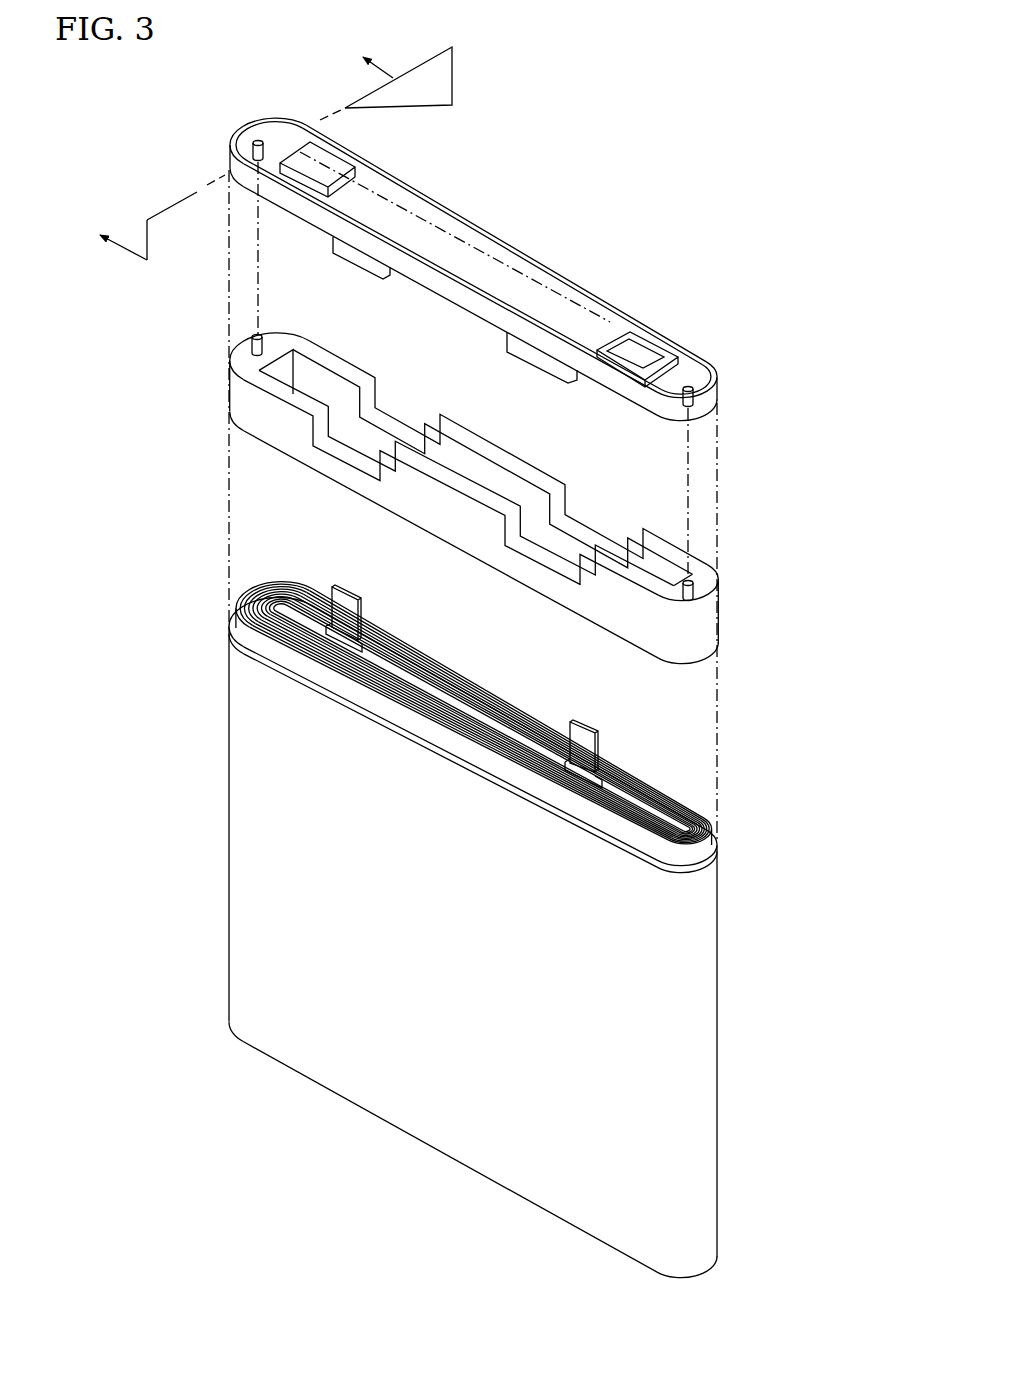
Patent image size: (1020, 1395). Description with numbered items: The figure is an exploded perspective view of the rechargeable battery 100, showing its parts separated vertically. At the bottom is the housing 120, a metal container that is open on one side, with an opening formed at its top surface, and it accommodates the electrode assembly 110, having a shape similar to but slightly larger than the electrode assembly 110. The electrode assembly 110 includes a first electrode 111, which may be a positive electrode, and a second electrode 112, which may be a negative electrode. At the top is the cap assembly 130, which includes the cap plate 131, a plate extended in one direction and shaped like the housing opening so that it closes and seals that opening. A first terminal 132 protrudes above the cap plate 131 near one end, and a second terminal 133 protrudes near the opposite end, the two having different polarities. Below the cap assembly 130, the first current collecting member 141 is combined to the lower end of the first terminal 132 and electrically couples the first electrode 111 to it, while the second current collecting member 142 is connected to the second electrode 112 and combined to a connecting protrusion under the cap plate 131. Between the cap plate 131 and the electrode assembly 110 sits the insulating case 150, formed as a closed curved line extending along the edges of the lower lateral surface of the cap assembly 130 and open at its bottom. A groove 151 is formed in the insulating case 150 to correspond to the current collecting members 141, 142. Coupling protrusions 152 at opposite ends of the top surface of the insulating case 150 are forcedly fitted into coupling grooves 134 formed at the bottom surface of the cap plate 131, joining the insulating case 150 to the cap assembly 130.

The rechargeable battery 100 is at (621, 53).
The electrode assembly 110 is at (218, 581).
The first electrode 111 is at (583, 735).
The second electrode 112 is at (347, 600).
The housing 120 is at (247, 830).
The cap assembly 130 is at (460, 203).
The cap plate 131 is at (507, 260).
The first terminal 132 is at (643, 343).
The second terminal 133 is at (352, 161).
The coupling groove 134 is at (228, 136).
The first current collecting member 141 is at (547, 363).
The second current collecting member 142 is at (360, 262).
The insulating case 150 is at (726, 624).
The groove 151 is at (612, 522).
The coupling protrusion 152 is at (697, 587).